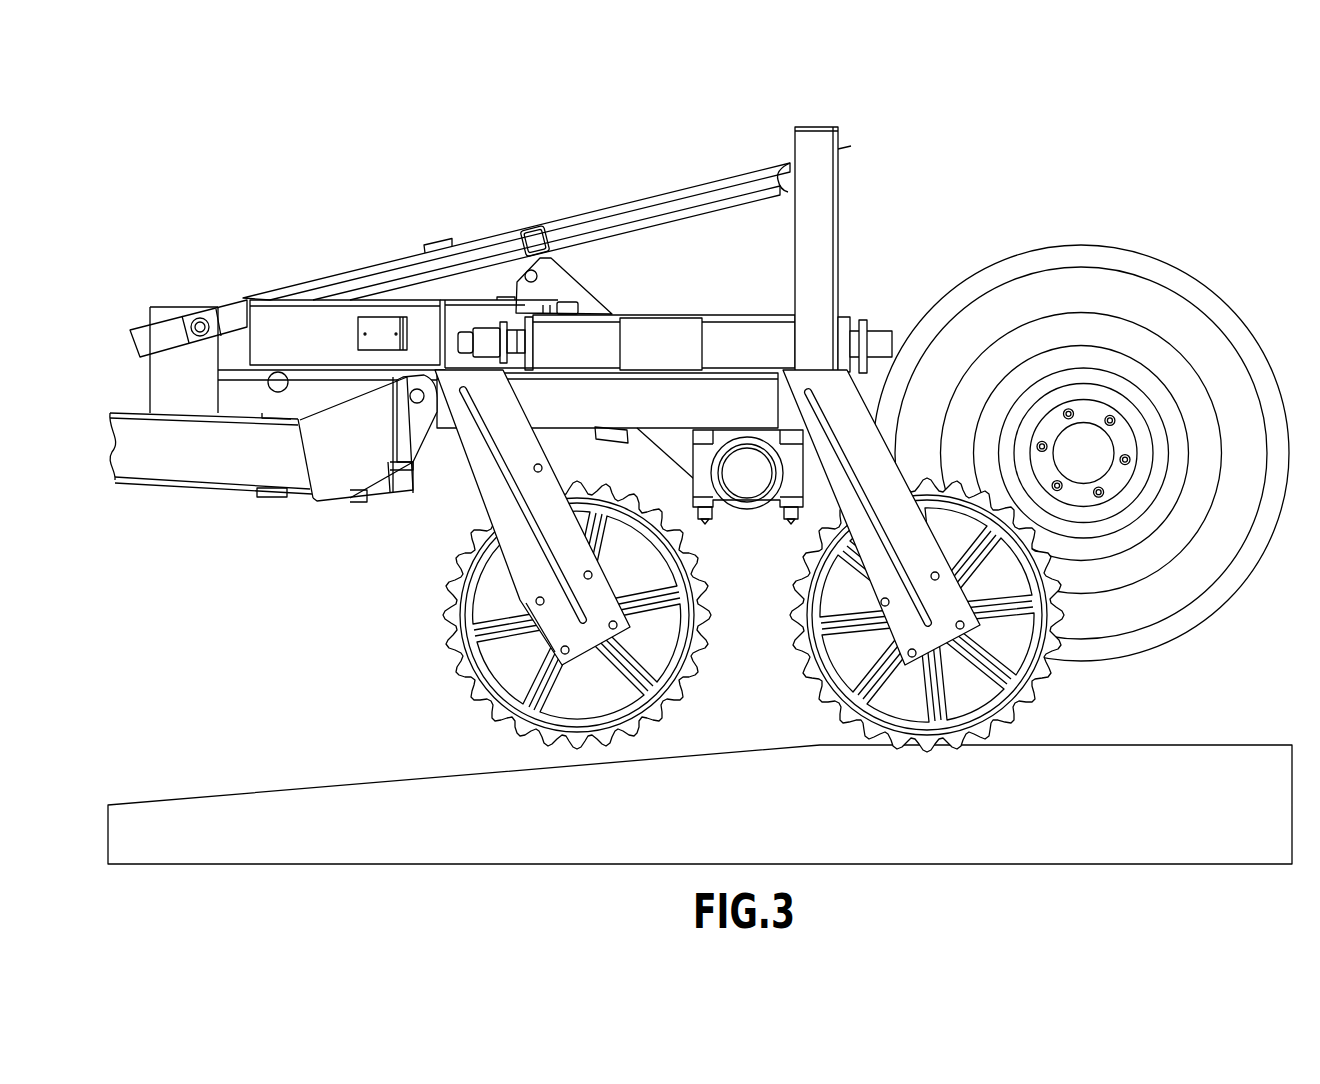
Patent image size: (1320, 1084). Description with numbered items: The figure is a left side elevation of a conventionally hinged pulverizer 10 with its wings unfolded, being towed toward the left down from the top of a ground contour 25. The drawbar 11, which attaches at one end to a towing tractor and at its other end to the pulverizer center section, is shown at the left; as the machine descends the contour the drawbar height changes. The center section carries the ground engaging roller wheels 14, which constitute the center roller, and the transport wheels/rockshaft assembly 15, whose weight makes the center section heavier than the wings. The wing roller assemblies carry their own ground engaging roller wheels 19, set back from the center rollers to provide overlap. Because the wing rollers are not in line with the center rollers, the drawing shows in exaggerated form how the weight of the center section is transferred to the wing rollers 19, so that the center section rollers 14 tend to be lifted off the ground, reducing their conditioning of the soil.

The pulverizer 10 is at (480, 173).
The drawbar 11 is at (188, 491).
The ground engaging roller wheels 14 is at (443, 627).
The transport wheels/rockshaft assembly 15 is at (1177, 596).
The ground engaging roller wheels 19 is at (817, 711).
The ground contour 25 is at (832, 810).